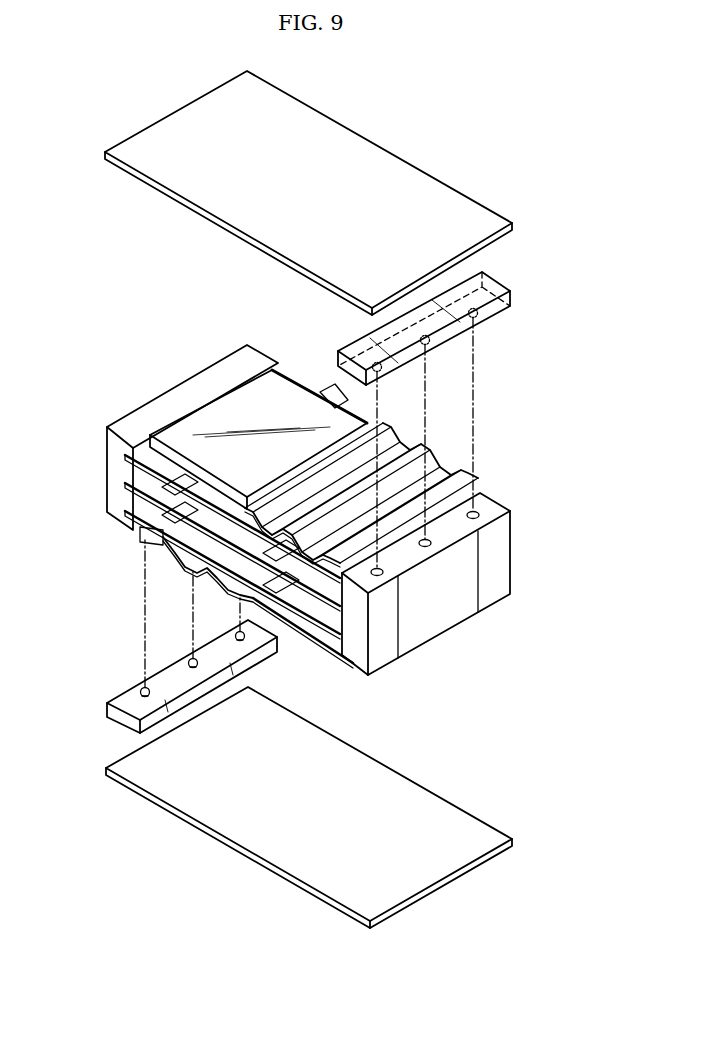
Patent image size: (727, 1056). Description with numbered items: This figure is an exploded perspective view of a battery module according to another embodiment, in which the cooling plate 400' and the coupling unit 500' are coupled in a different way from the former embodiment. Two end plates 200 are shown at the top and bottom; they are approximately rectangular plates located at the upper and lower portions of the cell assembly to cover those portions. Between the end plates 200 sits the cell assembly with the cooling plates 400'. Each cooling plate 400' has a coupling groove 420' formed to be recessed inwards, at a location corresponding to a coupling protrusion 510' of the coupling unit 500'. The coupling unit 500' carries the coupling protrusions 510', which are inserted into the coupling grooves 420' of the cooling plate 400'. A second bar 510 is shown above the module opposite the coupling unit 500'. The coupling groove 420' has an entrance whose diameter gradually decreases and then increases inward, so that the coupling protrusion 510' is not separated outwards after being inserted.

The end plate 200 is at (357, 147).
The cooling plate 400' is at (339, 506).
The coupling groove 420' is at (453, 522).
The fastening bar 510 is at (457, 320).
The coupling protrusion 510' is at (315, 503).
The coupling unit 500' is at (159, 687).